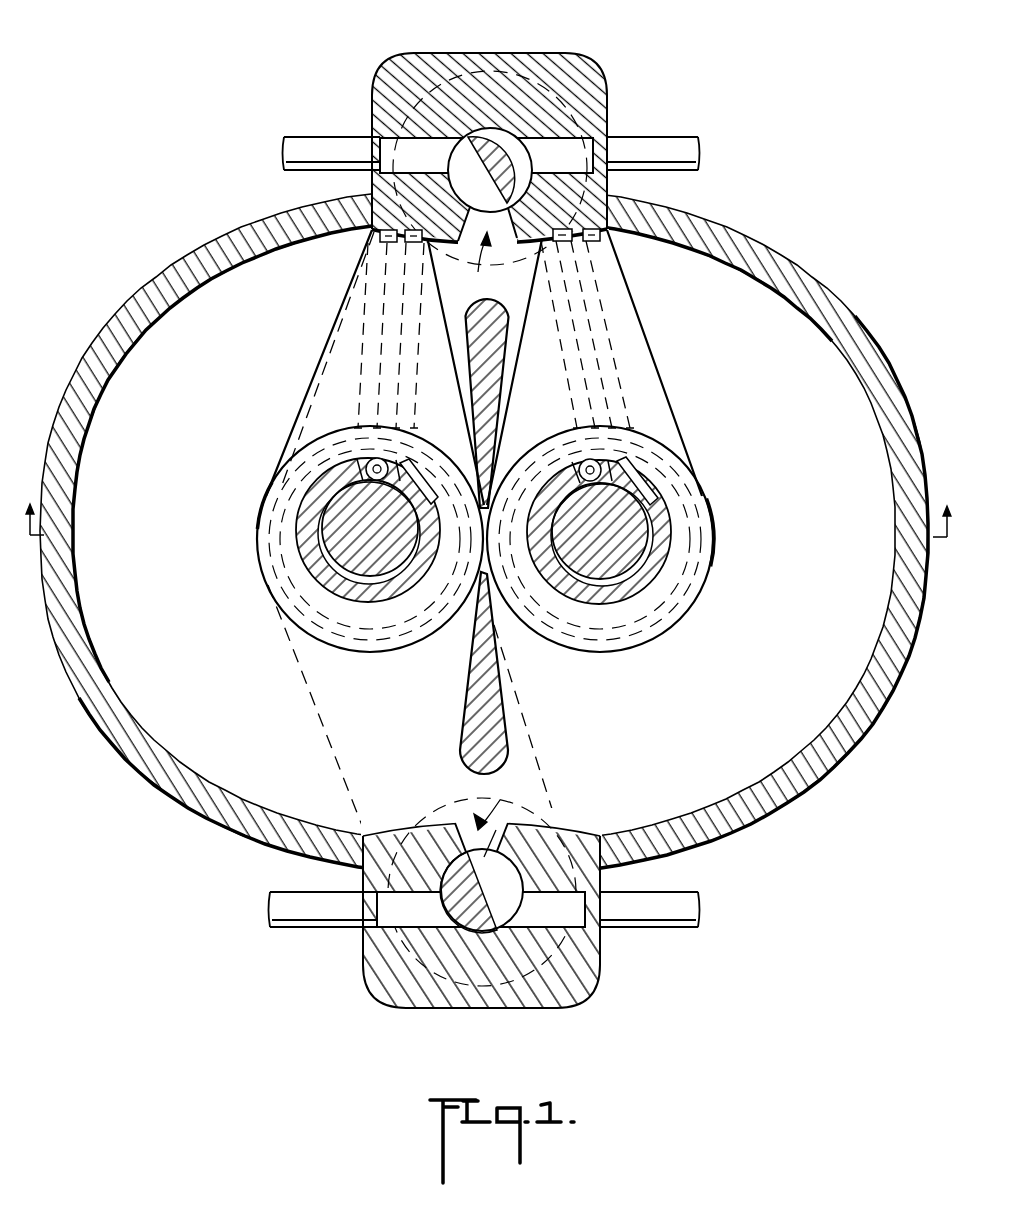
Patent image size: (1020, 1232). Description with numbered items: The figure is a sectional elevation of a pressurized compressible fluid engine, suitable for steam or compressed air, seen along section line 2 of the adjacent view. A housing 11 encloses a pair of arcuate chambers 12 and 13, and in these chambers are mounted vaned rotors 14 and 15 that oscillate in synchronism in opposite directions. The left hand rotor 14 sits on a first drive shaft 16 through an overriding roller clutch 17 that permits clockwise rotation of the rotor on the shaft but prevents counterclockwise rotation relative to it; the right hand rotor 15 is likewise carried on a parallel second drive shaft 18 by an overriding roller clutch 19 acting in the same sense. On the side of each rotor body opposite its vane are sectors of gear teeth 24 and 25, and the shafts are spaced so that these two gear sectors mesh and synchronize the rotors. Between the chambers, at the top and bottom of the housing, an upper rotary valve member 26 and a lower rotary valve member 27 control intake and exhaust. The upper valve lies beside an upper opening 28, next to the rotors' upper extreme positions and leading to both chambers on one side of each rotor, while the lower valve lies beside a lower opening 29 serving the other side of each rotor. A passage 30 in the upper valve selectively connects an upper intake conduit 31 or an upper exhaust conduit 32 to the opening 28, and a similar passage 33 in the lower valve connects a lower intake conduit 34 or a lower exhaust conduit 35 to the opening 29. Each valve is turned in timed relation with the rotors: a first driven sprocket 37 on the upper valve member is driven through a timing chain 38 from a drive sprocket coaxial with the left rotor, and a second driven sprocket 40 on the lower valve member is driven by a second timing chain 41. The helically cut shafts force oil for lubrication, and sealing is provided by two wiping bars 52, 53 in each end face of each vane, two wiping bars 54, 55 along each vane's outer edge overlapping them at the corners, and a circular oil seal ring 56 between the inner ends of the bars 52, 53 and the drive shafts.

The section line 2- 2 is at (485, 508).
The housing 11 is at (84, 327).
The arcuate chamber 12 is at (146, 516).
The arcuate chamber 13 is at (812, 525).
The left hand rotor 14 is at (300, 419).
The right hand rotor 15 is at (630, 345).
The first drive shaft 16 is at (337, 562).
The overriding roller clutch 17 is at (306, 548).
The second drive shaft 18 is at (643, 547).
The overriding roller clutch 19 is at (640, 576).
The sector of gear teeth 24 is at (388, 642).
The sector of gear teeth 25 is at (640, 637).
The upper rotary valve member 26 is at (527, 158).
The lower rotary valve member 27 is at (448, 910).
The upper opening 28 is at (492, 259).
The lower opening 29 is at (495, 830).
The passage 30 is at (456, 165).
The upper intake conduit 31 is at (314, 150).
The upper exhaust conduit 32 is at (655, 150).
The passage 33 is at (492, 828).
The lower intake conduit 34 is at (304, 926).
The lower exhaust conduit 35 is at (668, 920).
The first driven sprocket 37 is at (486, 86).
The timing chain 38 is at (322, 372).
The second driven sprocket 40 is at (444, 804).
The second timing chain 41 is at (338, 742).
The wiping bar 52 is at (356, 405).
The wiping bar 53 is at (414, 406).
The wiping bar 54 is at (378, 233).
The wiping bar 55 is at (600, 236).
The circular oil seal ring 56 is at (450, 437).